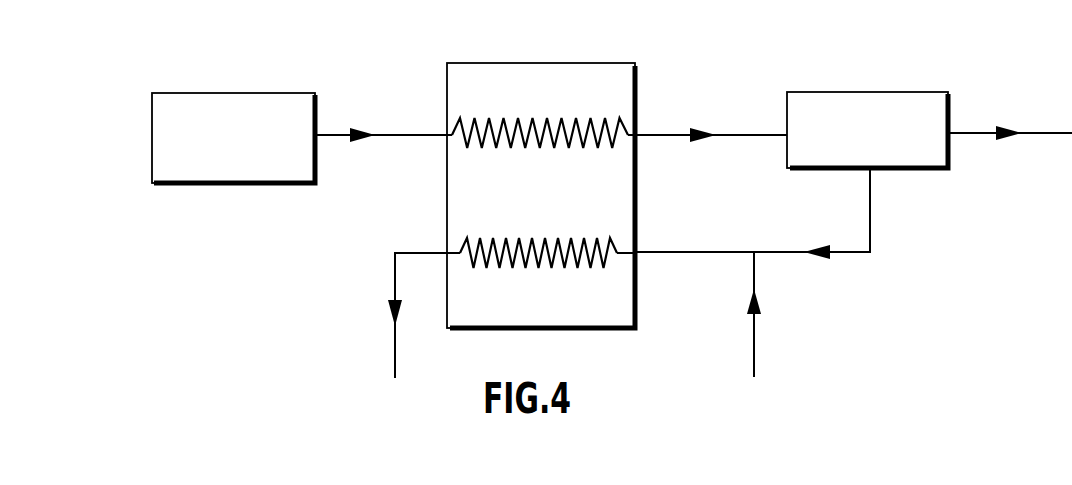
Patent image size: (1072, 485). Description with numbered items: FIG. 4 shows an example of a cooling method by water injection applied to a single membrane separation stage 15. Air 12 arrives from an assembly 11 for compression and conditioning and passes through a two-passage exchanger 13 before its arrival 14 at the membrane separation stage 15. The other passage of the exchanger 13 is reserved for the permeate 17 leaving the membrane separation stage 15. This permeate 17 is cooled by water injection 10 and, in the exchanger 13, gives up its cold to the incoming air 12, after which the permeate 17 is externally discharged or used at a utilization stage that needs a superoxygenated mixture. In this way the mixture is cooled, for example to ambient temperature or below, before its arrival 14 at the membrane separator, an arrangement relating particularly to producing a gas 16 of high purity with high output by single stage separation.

The water injection 10 is at (761, 334).
The assembly for compression and conditioning 11 is at (237, 87).
The air 12 is at (341, 124).
The exchanger 13 is at (546, 58).
The arrival at membrane separator 14 is at (673, 126).
The membrane separation stage 15 is at (874, 86).
The gas 16 is at (981, 124).
The permeate 17 is at (881, 234).